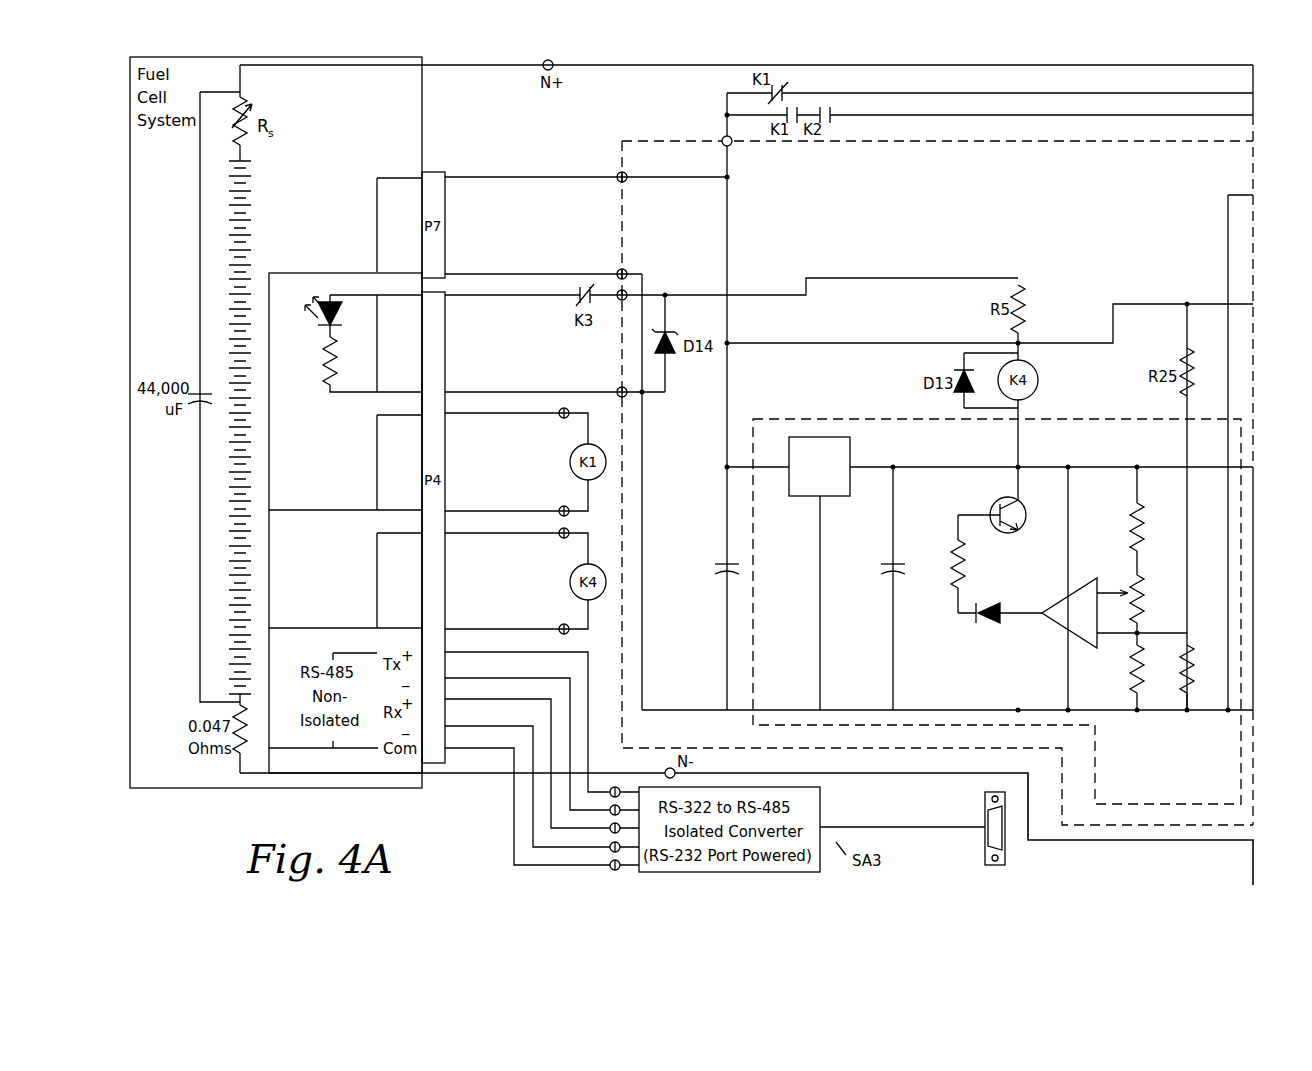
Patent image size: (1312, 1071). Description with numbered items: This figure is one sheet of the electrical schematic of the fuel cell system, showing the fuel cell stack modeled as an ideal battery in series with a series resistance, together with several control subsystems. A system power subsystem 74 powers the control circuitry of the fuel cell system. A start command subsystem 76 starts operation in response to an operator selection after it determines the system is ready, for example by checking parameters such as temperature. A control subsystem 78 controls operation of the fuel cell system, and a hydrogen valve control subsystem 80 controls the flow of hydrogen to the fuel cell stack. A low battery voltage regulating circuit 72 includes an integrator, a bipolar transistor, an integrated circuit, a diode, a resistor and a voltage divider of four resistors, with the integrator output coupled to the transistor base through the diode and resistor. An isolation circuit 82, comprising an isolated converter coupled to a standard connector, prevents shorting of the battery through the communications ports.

The low battery voltage regulating circuit 72 is at (1120, 805).
The system power subsystem 74 is at (351, 224).
The start command subsystem 76 is at (366, 378).
The control subsystem 78 is at (358, 463).
The hydrogen valve control subsystem 80 is at (356, 580).
The isolation circuit 82 is at (953, 866).